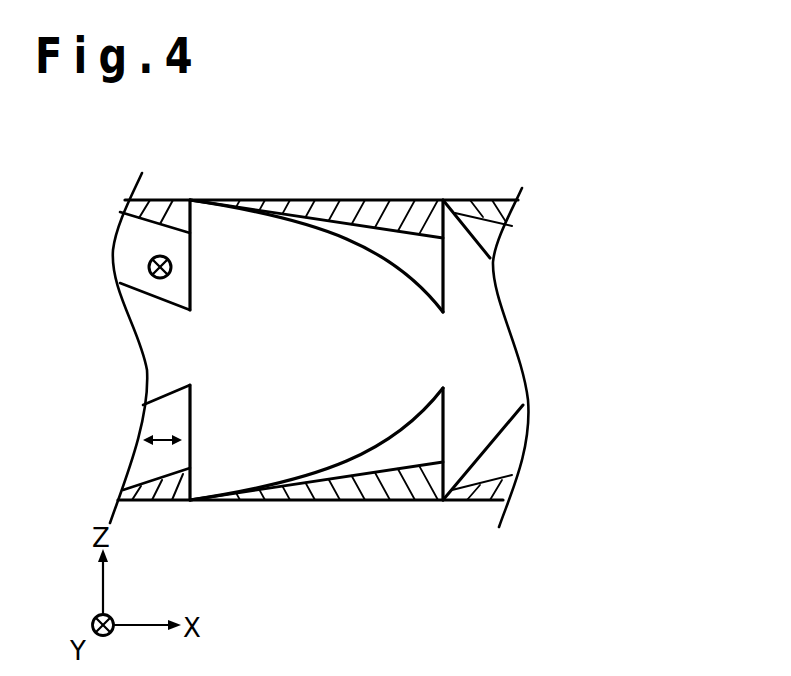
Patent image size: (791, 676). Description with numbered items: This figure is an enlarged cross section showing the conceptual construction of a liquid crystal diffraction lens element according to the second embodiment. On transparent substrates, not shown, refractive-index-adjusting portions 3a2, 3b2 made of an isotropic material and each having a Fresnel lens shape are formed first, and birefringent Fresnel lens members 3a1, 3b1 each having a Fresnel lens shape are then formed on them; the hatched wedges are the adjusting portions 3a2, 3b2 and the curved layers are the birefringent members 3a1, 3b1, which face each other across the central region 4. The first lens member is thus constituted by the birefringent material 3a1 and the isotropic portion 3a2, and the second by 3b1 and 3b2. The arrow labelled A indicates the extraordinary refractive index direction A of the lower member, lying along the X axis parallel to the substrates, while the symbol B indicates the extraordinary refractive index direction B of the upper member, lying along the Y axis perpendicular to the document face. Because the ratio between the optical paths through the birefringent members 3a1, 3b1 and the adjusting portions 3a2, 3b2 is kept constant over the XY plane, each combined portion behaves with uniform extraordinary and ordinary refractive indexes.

The core 4 is at (392, 352).
The birefringent Fresnel lens member 3a1 is at (420, 425).
The refractive-index-adjusting portion 3a2 is at (400, 485).
The birefringent Fresnel lens member 3b1 is at (415, 273).
The refractive-index-adjusting portion 3b2 is at (413, 213).
The extraordinary refractive index direction A is at (162, 447).
The extraordinary refractive index direction B is at (158, 256).